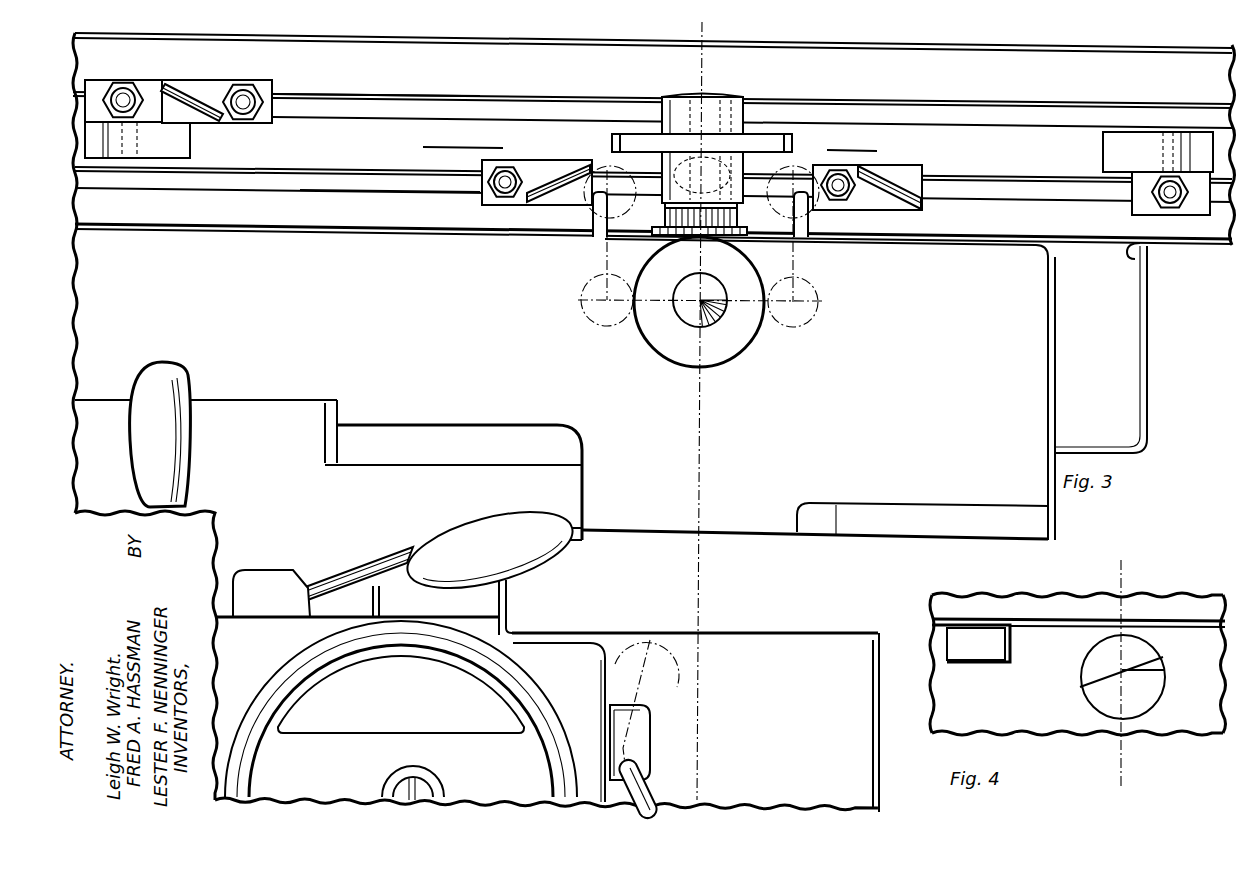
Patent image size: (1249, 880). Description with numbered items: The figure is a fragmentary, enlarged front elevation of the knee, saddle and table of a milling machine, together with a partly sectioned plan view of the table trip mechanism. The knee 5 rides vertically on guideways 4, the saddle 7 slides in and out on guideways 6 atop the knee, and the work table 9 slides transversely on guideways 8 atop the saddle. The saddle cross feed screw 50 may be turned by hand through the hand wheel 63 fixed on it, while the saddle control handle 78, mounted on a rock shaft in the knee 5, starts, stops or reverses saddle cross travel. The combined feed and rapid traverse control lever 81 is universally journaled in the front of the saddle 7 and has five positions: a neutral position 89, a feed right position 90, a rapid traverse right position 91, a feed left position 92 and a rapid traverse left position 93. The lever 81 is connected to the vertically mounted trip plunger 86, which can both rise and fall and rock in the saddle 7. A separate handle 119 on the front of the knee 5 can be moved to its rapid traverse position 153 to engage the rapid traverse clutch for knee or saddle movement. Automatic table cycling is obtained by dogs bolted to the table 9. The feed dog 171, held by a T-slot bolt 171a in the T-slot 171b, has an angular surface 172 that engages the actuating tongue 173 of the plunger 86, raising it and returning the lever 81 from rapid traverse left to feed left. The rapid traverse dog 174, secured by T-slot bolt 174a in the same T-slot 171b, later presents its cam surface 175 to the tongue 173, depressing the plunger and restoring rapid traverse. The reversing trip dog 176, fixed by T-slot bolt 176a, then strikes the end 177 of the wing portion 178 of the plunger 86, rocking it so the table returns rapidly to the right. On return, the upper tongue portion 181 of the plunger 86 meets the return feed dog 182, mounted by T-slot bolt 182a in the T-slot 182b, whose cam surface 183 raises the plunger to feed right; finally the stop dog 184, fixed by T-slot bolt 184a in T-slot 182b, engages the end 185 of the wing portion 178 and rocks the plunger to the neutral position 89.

In FIG. 3, the guideways 4 is at (453, 125).
In FIG. 3, the knee 5 is at (872, 786).
In FIG. 3, the guideways 6 is at (402, 463).
In FIG. 4, the guideways 6 is at (1160, 561).
In FIG. 3, the saddle 7 is at (1130, 381).
In FIG. 4, the saddle 7 is at (987, 717).
In FIG. 3, the guideways 8 is at (1143, 260).
In FIG. 3, the work table 9 is at (652, 138).
In FIG. 4, the work table 9 is at (1203, 606).
In FIG. 3, the saddle cross feed screw 50 is at (418, 796).
In FIG. 3, the hand wheel 63 is at (548, 690).
In FIG. 3, the saddle control handle 78 is at (474, 535).
In FIG. 3, the combined feed and rapid traverse control lever 81 is at (712, 286).
In FIG. 4, the trip plunger 86 is at (1123, 677).
In FIG. 3, the neutral position 89 is at (712, 318).
In FIG. 3, the feed right position 90 is at (806, 308).
In FIG. 3, the rapid traverse right position 91 is at (807, 227).
In FIG. 3, the feed left position 92 is at (609, 308).
In FIG. 3, the rapid traverse left position 93 is at (598, 220).
In FIG. 3, the rapid traverse control handle 119 is at (647, 782).
In FIG. 3, the rapid traverse position 153 is at (662, 679).
In FIG. 3, the feed dog 171 is at (537, 182).
In FIG. 4, the feed dog 171 is at (976, 644).
In FIG. 3, the T-slot bolt 171a is at (504, 184).
In FIG. 3, the T-slot 171b is at (373, 184).
In FIG. 3, the angular surface 172 is at (567, 177).
In FIG. 4, the angular surface 172 is at (992, 652).
In FIG. 3, the actuating tongue 173 is at (714, 166).
In FIG. 4, the actuating tongue 173 is at (1157, 668).
In FIG. 3, the rapid traverse dog 174 is at (867, 188).
In FIG. 3, the T-slot bolt 174a is at (843, 202).
In FIG. 3, the cam surface 175 is at (897, 178).
In FIG. 3, the reversing trip dog 176 is at (1158, 152).
In FIG. 3, the T-slot bolt 176a is at (1172, 198).
In FIG. 3, the end of wing portion 177 is at (794, 148).
In FIG. 3, the wing portion 178 is at (756, 142).
In FIG. 3, the upper tongue portion 181 is at (670, 104).
In FIG. 3, the return feed dog 182 is at (217, 101).
In FIG. 3, the T-slot bolt 182a is at (243, 100).
In FIG. 3, the T-slot 182b is at (323, 102).
In FIG. 3, the cam surface 183 is at (185, 93).
In FIG. 3, the stop dog 184 is at (137, 140).
In FIG. 3, the T-slot bolt 184a is at (123, 100).
In FIG. 3, the end of wing portion 185 is at (618, 152).